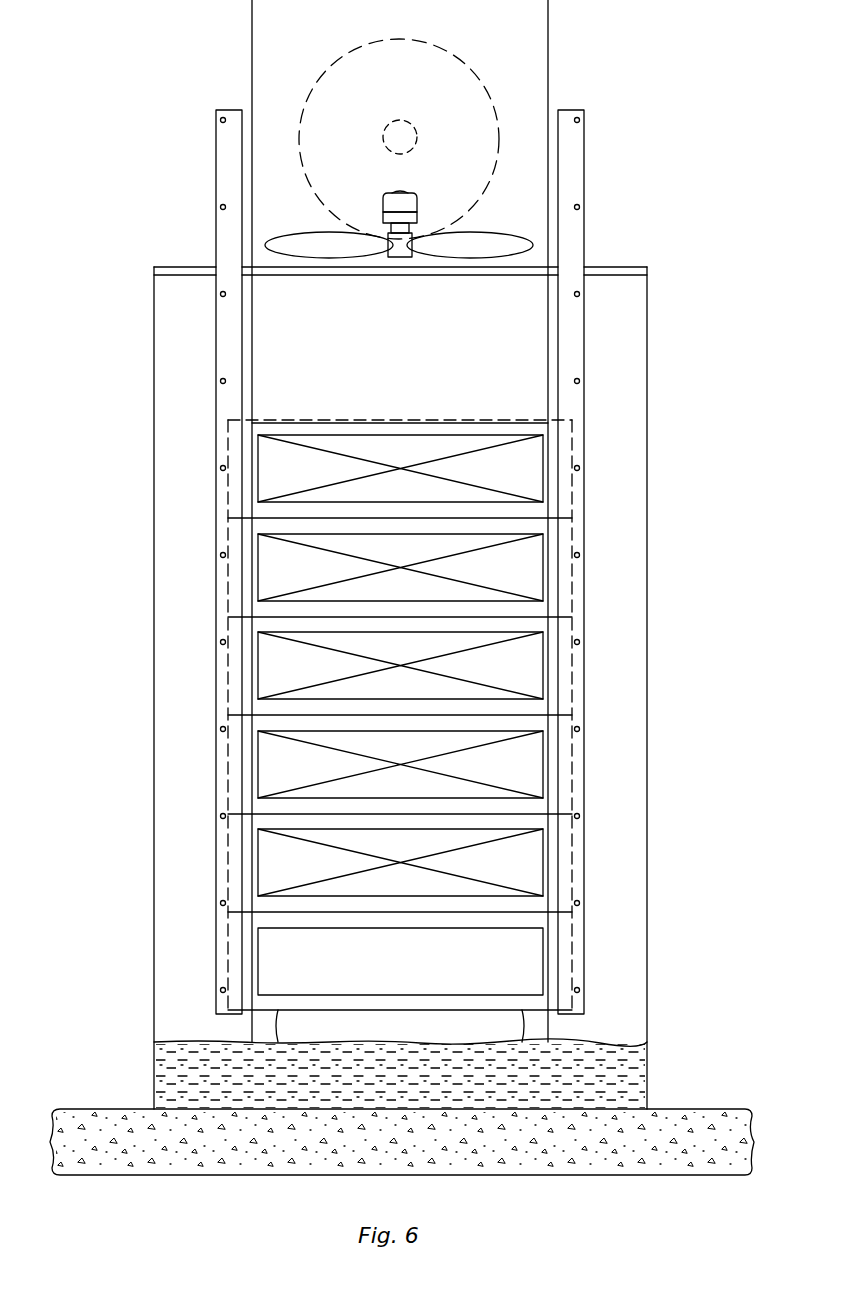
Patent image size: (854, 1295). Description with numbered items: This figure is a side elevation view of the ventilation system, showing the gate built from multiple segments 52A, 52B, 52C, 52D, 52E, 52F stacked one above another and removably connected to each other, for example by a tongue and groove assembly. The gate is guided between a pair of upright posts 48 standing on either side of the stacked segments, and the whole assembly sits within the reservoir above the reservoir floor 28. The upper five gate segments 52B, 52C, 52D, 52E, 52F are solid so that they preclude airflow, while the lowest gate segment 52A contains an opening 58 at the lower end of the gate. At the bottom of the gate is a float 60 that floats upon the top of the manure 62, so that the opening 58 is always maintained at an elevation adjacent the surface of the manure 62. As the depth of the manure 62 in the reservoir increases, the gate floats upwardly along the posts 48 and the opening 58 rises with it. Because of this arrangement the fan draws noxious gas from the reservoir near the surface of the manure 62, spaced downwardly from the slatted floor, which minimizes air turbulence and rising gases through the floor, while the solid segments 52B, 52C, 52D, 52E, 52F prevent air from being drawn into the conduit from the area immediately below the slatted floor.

The reservoir floor 28 is at (680, 1165).
The vertical posts 48 is at (226, 340).
The gate segment 52A is at (553, 950).
The gate segment 52B is at (553, 853).
The gate segment 52C is at (553, 755).
The gate segment 52D is at (553, 665).
The gate segment 52E is at (553, 558).
The gate segment 52F is at (553, 462).
The opening 58 is at (285, 953).
The float 60 is at (508, 1027).
The manure 62 is at (628, 1062).